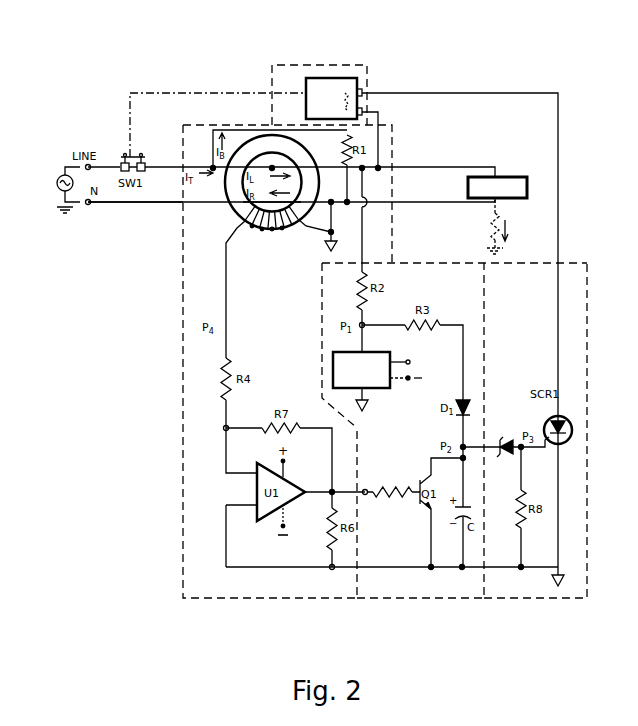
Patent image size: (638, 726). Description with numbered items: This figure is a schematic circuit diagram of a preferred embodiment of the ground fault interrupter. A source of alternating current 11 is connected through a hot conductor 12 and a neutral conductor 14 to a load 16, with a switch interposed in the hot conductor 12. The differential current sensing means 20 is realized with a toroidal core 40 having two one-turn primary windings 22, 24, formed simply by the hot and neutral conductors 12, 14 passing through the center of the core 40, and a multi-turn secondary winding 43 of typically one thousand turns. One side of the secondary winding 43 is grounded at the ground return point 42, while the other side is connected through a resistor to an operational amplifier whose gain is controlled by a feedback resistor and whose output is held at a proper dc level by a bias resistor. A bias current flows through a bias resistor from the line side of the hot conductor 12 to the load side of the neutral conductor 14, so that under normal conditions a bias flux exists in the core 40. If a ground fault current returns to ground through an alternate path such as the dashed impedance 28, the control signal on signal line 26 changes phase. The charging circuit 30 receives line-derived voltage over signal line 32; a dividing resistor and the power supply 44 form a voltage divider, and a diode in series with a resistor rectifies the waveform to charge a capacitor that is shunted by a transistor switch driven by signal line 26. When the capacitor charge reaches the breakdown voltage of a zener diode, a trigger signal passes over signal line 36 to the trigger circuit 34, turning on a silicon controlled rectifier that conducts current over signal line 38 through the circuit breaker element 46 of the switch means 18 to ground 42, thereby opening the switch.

The source of alternating current 11 is at (58, 180).
The hot conductor 12 is at (172, 150).
The neutral conductor 14 is at (110, 203).
The load 16 is at (500, 177).
The switch means 18 is at (367, 88).
The differential current sensing means 20 is at (183, 368).
The coupling point (primary winding) 22 is at (274, 166).
The coupling point (primary winding) 24 is at (246, 201).
The signal line 26 is at (388, 464).
The path (dashed impedance) 28 is at (488, 216).
The charging circuit 30 is at (410, 600).
The signal line 32 is at (362, 228).
The trigger circuit 34 is at (531, 600).
The signal line 36 is at (488, 446).
The signal line 38 is at (558, 178).
The toroidal core 40 is at (234, 211).
The ground return point 42 is at (328, 242).
The secondary winding 43 is at (238, 236).
The power supply 44 is at (375, 352).
The circuit breaker element 46 is at (333, 78).